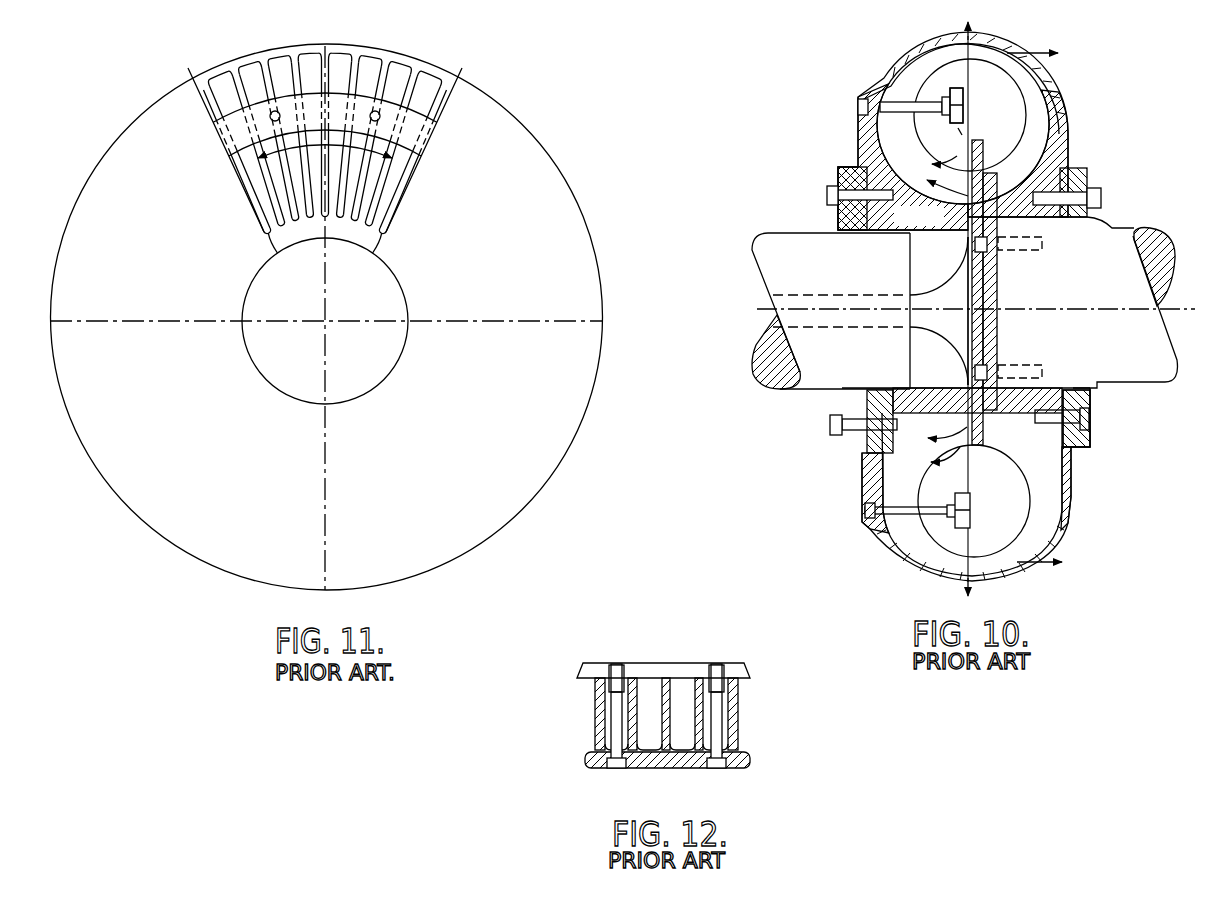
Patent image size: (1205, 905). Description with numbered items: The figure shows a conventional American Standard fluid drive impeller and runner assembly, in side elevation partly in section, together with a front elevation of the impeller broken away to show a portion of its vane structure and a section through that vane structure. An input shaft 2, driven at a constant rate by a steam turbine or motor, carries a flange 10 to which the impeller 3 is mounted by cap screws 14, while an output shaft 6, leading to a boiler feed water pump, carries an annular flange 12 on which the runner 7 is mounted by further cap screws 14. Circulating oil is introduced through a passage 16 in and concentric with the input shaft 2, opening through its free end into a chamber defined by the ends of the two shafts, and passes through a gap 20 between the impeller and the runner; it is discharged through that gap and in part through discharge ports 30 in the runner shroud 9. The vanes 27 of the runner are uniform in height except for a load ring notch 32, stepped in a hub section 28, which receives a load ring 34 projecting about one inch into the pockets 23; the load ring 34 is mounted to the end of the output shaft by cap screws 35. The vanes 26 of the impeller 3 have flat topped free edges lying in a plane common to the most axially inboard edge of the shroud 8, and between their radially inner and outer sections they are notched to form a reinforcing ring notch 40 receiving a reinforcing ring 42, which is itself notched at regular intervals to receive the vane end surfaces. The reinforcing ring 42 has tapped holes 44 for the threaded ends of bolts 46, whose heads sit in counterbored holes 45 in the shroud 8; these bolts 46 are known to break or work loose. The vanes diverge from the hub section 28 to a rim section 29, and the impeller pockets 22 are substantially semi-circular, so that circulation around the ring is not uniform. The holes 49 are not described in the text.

In FIG. 10, the input shaft 2 is at (790, 233).
In FIG. 10, the impeller 3 is at (870, 75).
In FIG. 10, the output shaft 6 is at (1113, 238).
In FIG. 10, the runner 7 is at (1070, 136).
In FIG. 10, the shroud 8 is at (893, 66).
In FIG. 12, the shroud 8 is at (672, 768).
In FIG. 10, the runner shroud 9 is at (1050, 86).
In FIG. 10, the flange 10 is at (840, 167).
In FIG. 11, the annular flange 12 is at (258, 158).
In FIG. 10, the annular flange 12 is at (1090, 426).
In FIG. 10, the cap screws 14 is at (828, 197).
In FIG. 10, the passage 16 is at (810, 296).
In FIG. 10, the gap 20 is at (968, 240).
In FIG. 10, the impeller pockets 22 is at (963, 124).
In FIG. 10, the pockets 23 is at (970, 115).
In FIG. 10, the vanes 26 is at (905, 78).
In FIG. 12, the vanes 26 is at (633, 735).
In FIG. 10, the vanes 27 is at (1042, 108).
In FIG. 10, the hub section 28 is at (1010, 192).
In FIG. 10, the rim section 29 is at (965, 42).
In FIG. 10, the discharge ports 30 is at (1022, 50).
In FIG. 10, the load ring notch 32 is at (977, 176).
In FIG. 10, the load ring 34 is at (990, 293).
In FIG. 10, the cap screws 35 is at (976, 253).
In FIG. 10, the reinforcing ring notch 40 is at (960, 130).
In FIG. 11, the reinforcing ring 42 is at (374, 110).
In FIG. 10, the reinforcing ring 42 is at (958, 93).
In FIG. 12, the reinforcing ring 42 is at (672, 663).
In FIG. 12, the tapped holes 44 is at (616, 675).
In FIG. 12, the counterbored holes 45 is at (616, 768).
In FIG. 10, the bolts 46 is at (930, 113).
In FIG. 12, the bolts 46 is at (611, 714).
In FIG. 11, the pin hole 49 is at (278, 110).